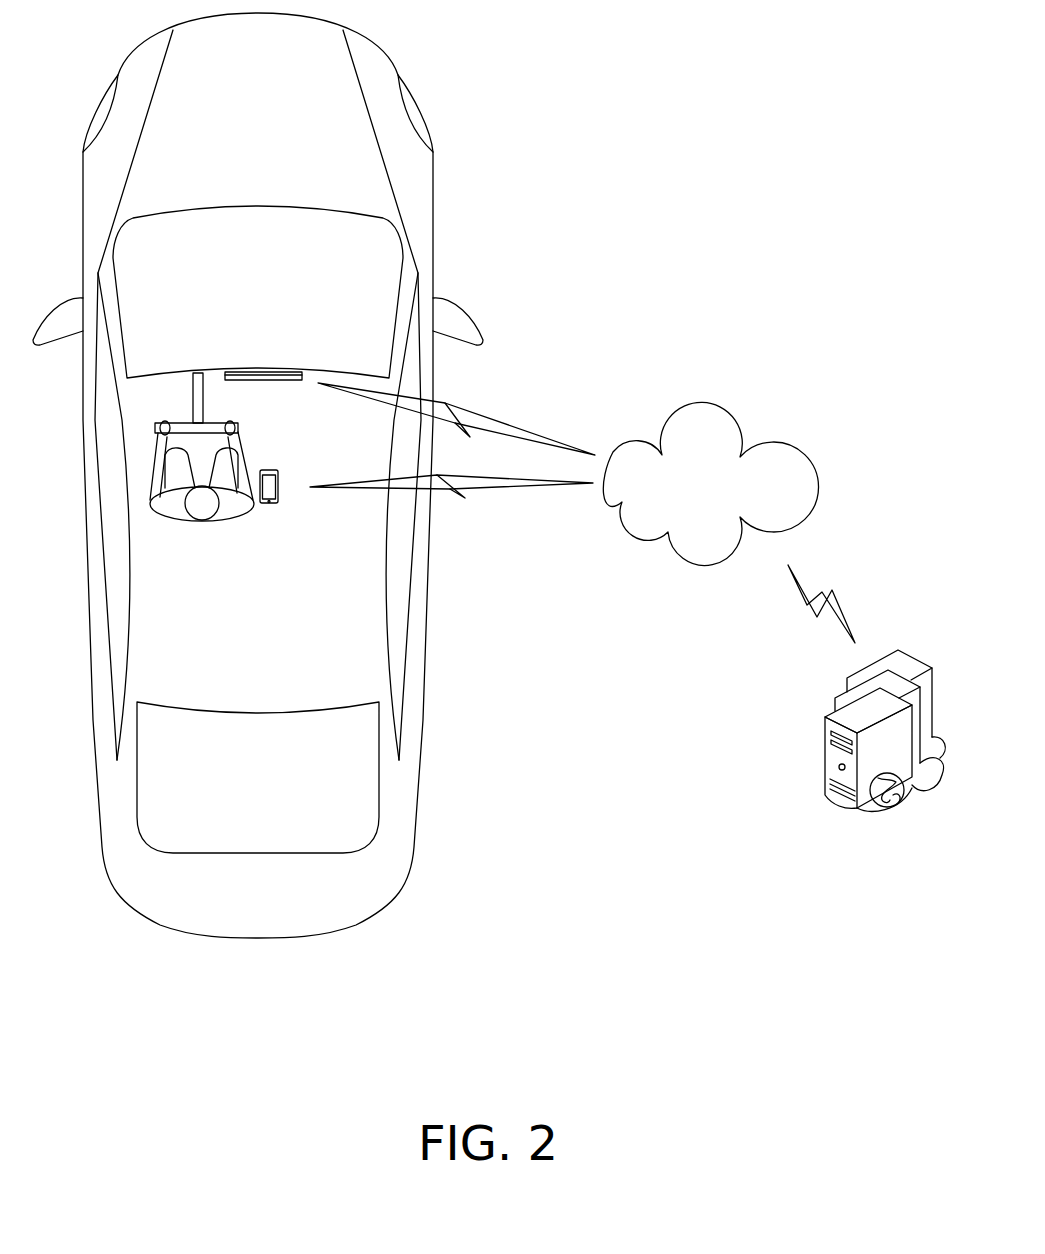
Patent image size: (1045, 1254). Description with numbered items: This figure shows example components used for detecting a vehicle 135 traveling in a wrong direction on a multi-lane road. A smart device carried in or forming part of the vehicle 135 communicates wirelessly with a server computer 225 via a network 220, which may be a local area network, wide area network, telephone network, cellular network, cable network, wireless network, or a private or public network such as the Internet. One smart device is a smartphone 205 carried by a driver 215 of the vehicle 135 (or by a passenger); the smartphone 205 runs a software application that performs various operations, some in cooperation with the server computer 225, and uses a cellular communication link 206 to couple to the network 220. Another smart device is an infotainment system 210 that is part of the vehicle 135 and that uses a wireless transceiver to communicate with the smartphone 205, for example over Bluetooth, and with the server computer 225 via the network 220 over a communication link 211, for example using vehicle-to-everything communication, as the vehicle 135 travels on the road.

The vehicle 135 is at (516, 106).
The smartphone 205 is at (279, 488).
The cellular communication link 206 is at (477, 485).
The infotainment system 210 is at (257, 380).
The communication link 211 is at (481, 411).
The driver 215 is at (215, 523).
The network 220 is at (792, 500).
The server computer 225 is at (803, 762).